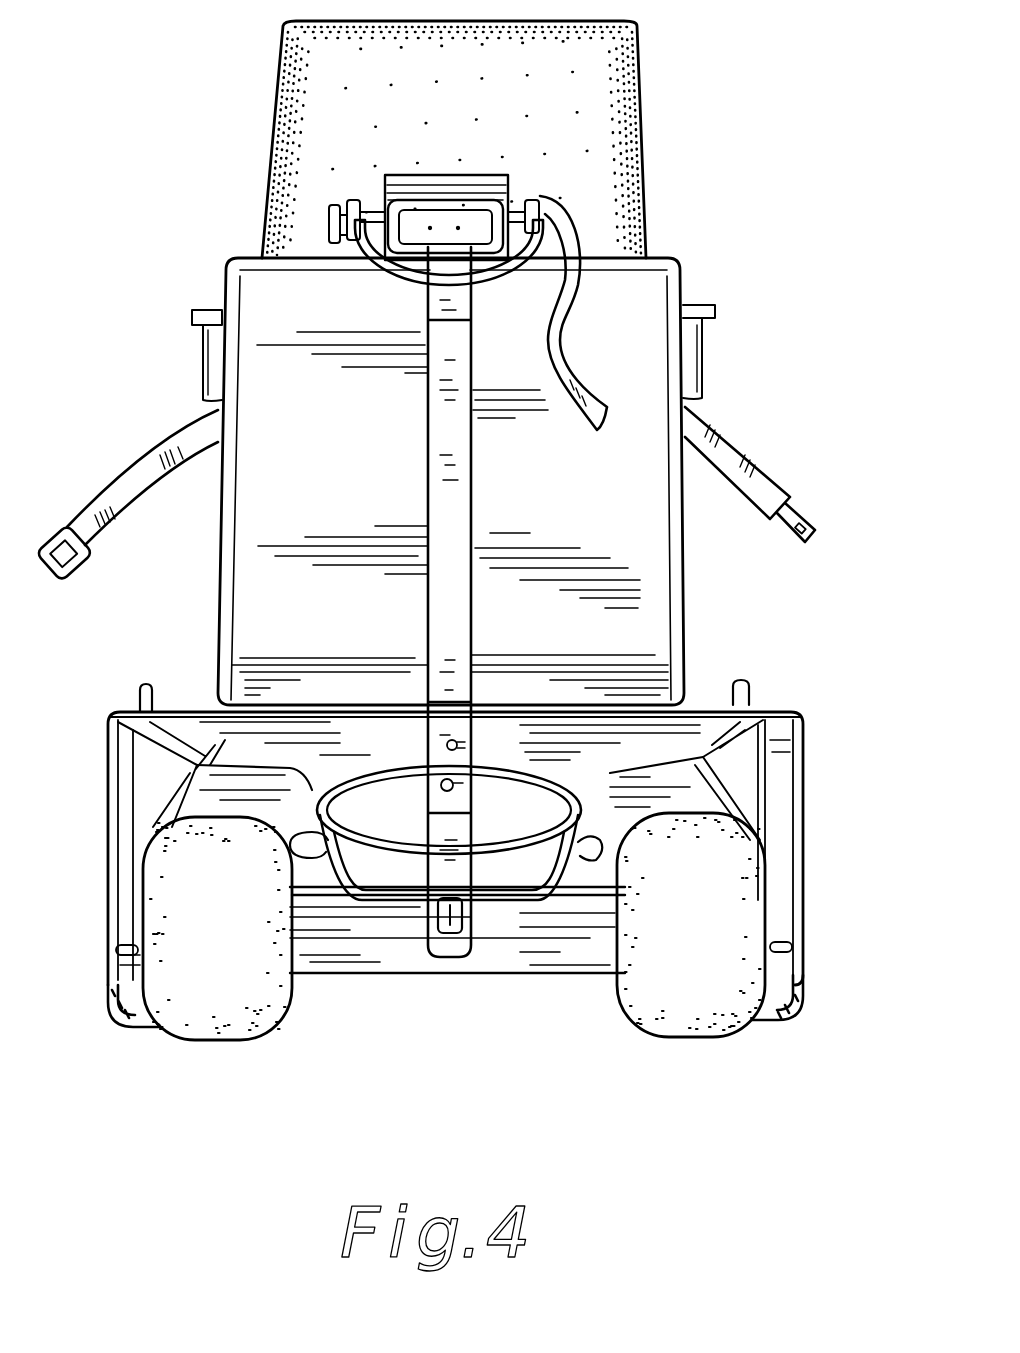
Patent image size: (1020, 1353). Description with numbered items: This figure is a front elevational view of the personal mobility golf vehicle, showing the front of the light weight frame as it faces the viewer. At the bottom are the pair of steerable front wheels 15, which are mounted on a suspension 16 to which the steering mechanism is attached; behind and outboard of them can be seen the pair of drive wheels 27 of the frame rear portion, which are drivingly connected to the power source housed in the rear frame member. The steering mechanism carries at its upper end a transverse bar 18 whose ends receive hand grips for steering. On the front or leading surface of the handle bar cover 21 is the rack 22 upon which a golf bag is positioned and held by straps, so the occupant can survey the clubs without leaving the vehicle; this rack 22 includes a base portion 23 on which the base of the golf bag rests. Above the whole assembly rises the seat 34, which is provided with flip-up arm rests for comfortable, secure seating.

The steerable front wheels 15 is at (228, 1010).
The suspension 16 is at (385, 935).
The transverse bar 18 is at (528, 190).
The handle bar cover 21 is at (655, 583).
The rack 22 is at (455, 543).
The base portion 23 is at (390, 773).
The drive wheels 27 is at (135, 1020).
The seat 34 is at (600, 85).